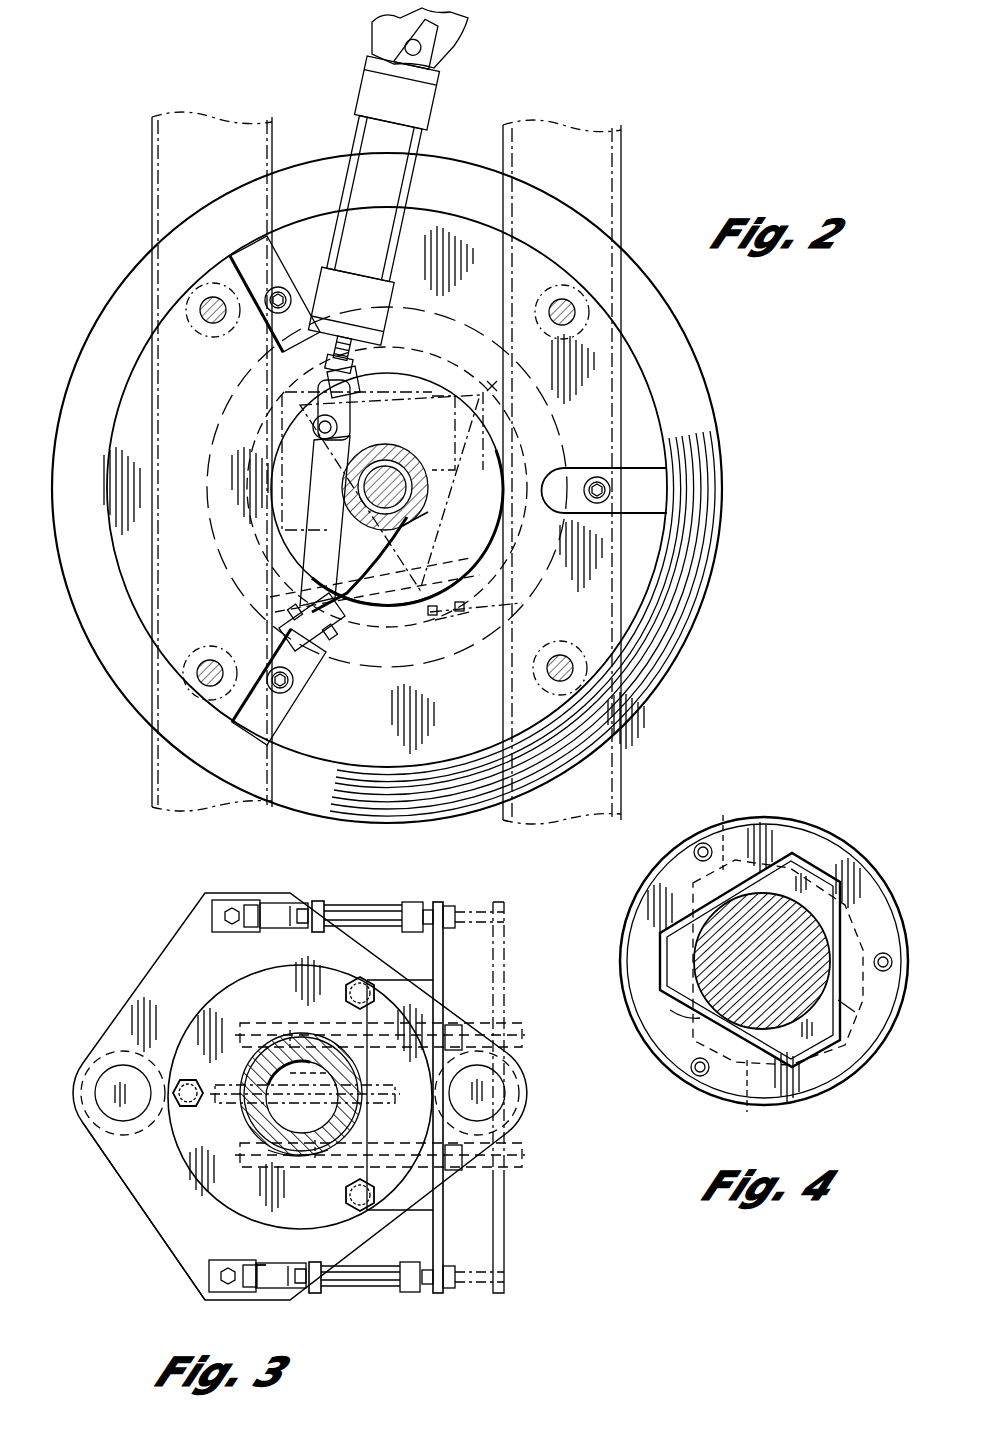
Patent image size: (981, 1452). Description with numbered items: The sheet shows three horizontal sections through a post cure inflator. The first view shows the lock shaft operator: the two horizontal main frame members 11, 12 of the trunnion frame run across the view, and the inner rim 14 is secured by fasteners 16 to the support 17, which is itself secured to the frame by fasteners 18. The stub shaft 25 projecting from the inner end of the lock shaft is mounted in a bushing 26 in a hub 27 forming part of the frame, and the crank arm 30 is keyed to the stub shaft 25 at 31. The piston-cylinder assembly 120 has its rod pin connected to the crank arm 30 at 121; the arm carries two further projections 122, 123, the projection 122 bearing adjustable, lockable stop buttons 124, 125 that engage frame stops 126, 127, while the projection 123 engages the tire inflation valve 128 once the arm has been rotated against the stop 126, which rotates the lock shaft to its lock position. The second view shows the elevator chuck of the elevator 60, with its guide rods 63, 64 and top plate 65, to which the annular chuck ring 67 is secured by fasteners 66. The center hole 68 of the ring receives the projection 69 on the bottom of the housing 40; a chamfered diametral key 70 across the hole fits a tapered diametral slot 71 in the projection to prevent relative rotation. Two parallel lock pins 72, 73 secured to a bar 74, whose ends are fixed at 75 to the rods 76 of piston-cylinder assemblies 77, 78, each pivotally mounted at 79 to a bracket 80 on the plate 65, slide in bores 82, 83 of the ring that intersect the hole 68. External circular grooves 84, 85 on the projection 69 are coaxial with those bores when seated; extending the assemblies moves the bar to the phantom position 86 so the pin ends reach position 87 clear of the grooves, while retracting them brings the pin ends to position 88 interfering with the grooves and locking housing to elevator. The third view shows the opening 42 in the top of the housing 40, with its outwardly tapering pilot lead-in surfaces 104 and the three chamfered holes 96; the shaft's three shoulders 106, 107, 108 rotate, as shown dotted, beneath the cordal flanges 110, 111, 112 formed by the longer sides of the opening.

In FIG. 2, the main frame member 11 is at (150, 148).
In FIG. 2, the main frame member 12 is at (622, 180).
In FIG. 2, the inner rim 14 is at (706, 392).
In FIG. 2, the fasteners 16 is at (595, 502).
In FIG. 2, the support 17 is at (648, 357).
In FIG. 2, the fasteners 18 is at (562, 660).
In FIG. 2, the stub shaft 25 is at (425, 476).
In FIG. 2, the bushing 26 is at (408, 496).
In FIG. 2, the hub 27 is at (426, 520).
In FIG. 2, the crank arm 30 is at (380, 557).
In FIG. 2, the key 31 is at (338, 468).
In FIG. 2, the piston-cylinder assembly 120 is at (398, 165).
In FIG. 2, the pin connection 121 is at (357, 418).
In FIG. 2, the projection 122 is at (346, 626).
In FIG. 2, the projection 123 is at (448, 440).
In FIG. 2, the stop button 124 is at (292, 620).
In FIG. 2, the stop button 125 is at (321, 656).
In FIG. 2, the frame stop 126 is at (290, 604).
In FIG. 2, the frame stop 127 is at (468, 610).
In FIG. 2, the tire inflation valve 128 is at (494, 385).
In FIG. 3, the elevator 60 is at (507, 1004).
In FIG. 3, the guide rod 63 is at (92, 1084).
In FIG. 3, the guide rod 64 is at (501, 1094).
In FIG. 3, the top plate 65 is at (150, 1211).
In FIG. 3, the fasteners 66 is at (184, 1105).
In FIG. 3, the chuck ring 67 is at (226, 998).
In FIG. 3, the center hole 68 is at (302, 1097).
In FIG. 3, the projection 69 is at (252, 1090).
In FIG. 3, the diametral key 70 is at (368, 1094).
In FIG. 3, the diametral slot 71 is at (355, 1153).
In FIG. 3, the lock pin 72 is at (455, 1025).
In FIG. 3, the lock pin 73 is at (455, 1170).
In FIG. 3, the bar 74 is at (443, 1245).
In FIG. 3, the bar end connection 75 is at (450, 1290).
In FIG. 3, the rod 76 is at (430, 1292).
In FIG. 3, the piston-cylinder assembly 77 is at (360, 907).
In FIG. 3, the piston-cylinder assembly 78 is at (352, 1292).
In FIG. 3, the pivot mounting 79 is at (316, 903).
In FIG. 3, the bracket 80 is at (260, 1292).
In FIG. 3, the bore 82 is at (262, 1023).
In FIG. 3, the bore 83 is at (258, 1168).
In FIG. 3, the circular groove 84 is at (309, 1076).
In FIG. 3, the circular groove 85 is at (256, 1136).
In FIG. 3, the phantom line position 86 is at (502, 1242).
In FIG. 3, the pin end release position 87 is at (336, 1170).
In FIG. 3, the pin end lock position 88 is at (292, 1028).
In FIG. 4, the housing 40 is at (834, 1084).
In FIG. 4, the opening 42 is at (836, 880).
In FIG. 4, the chamfered hole 96 is at (700, 1077).
In FIG. 4, the pilot lead-in surface 104 is at (836, 899).
In FIG. 4, the shoulder 106 is at (725, 829).
In FIG. 4, the shoulder 107 is at (747, 1097).
In FIG. 4, the shoulder 108 is at (855, 985).
In FIG. 4, the cordal flange 110 is at (690, 905).
In FIG. 4, the cordal flange 111 is at (688, 1018).
In FIG. 4, the cordal flange 112 is at (842, 1004).